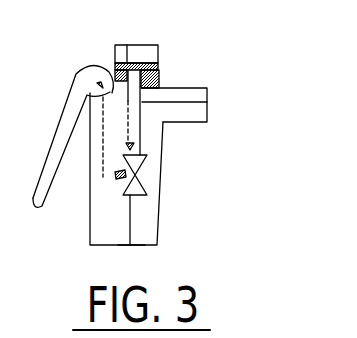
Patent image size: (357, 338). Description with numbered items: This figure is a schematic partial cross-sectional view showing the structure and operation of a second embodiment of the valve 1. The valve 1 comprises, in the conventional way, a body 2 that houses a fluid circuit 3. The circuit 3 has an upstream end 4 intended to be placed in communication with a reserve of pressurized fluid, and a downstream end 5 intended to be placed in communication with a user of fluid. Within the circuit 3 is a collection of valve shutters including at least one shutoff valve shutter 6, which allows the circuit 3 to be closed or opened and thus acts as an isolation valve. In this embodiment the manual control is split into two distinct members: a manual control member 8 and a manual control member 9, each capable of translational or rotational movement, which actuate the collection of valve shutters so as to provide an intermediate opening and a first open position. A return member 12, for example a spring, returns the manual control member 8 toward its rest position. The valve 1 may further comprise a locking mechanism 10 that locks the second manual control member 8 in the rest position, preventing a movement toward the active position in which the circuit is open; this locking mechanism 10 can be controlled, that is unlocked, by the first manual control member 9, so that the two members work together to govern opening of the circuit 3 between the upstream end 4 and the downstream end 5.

The valve 1 is at (213, 135).
The body 2 is at (150, 223).
The fluid circuit 3 is at (128, 212).
The upstream end 4 is at (124, 248).
The downstream end 5 is at (209, 101).
The shutoff valve shutter 6 is at (148, 177).
The manual control member 8 is at (37, 189).
The manual control member 9 is at (139, 45).
The locking mechanism 10 is at (115, 47).
The return member 12 is at (160, 72).